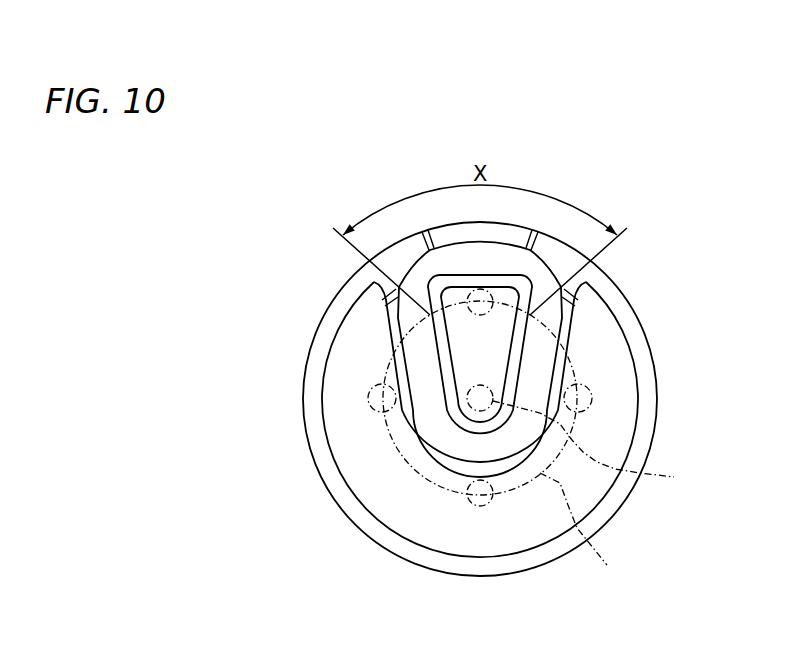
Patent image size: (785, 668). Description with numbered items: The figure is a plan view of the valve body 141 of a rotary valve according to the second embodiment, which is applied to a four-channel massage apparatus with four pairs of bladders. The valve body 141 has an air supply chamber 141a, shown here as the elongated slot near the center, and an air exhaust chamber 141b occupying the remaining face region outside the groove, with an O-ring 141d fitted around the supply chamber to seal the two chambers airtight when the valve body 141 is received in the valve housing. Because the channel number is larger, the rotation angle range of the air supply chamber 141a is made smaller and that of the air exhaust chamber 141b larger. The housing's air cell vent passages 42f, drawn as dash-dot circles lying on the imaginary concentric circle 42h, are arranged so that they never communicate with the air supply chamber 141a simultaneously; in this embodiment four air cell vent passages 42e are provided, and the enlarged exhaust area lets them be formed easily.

The valve body 141 is at (310, 350).
The air supply chamber 141a is at (497, 342).
The air exhaust chamber 141b is at (405, 515).
The O-ring 141d is at (500, 256).
The air cell vent passages 42f is at (437, 310).
The air cell vent passages 42e is at (604, 447).
The imaginary concentric circle 42h is at (595, 530).